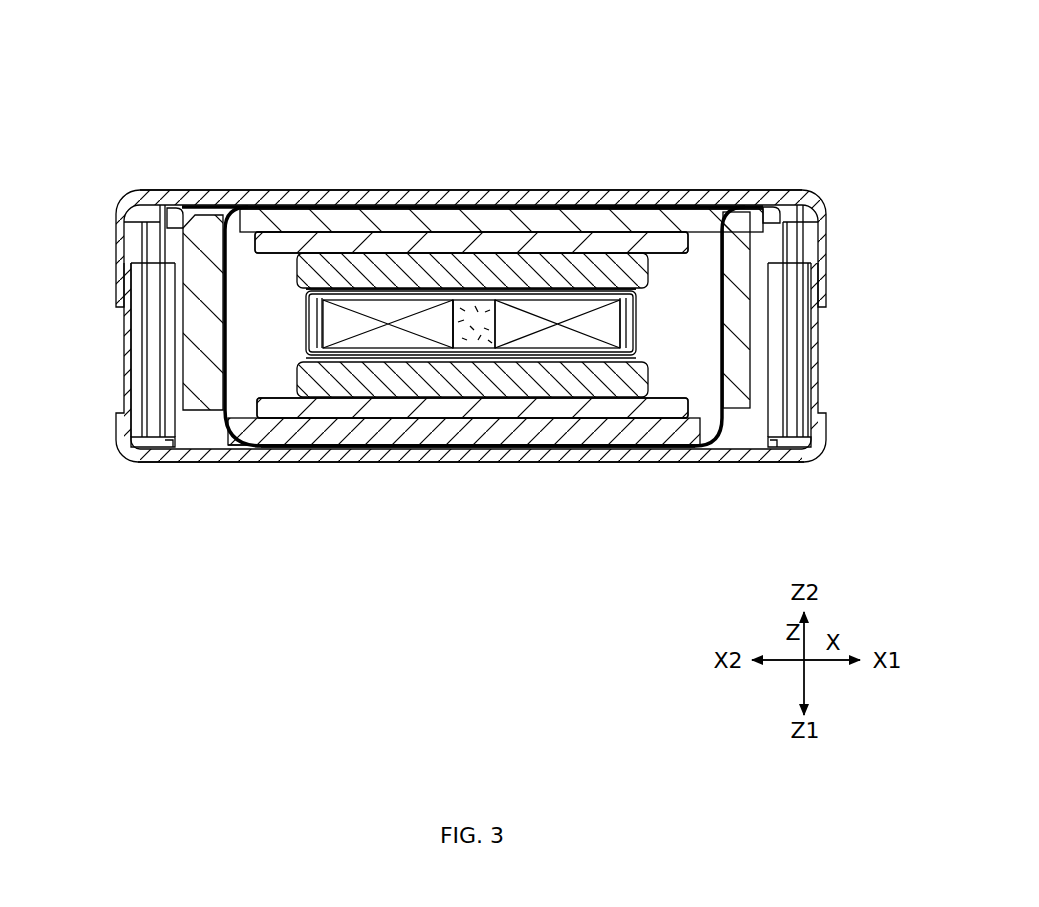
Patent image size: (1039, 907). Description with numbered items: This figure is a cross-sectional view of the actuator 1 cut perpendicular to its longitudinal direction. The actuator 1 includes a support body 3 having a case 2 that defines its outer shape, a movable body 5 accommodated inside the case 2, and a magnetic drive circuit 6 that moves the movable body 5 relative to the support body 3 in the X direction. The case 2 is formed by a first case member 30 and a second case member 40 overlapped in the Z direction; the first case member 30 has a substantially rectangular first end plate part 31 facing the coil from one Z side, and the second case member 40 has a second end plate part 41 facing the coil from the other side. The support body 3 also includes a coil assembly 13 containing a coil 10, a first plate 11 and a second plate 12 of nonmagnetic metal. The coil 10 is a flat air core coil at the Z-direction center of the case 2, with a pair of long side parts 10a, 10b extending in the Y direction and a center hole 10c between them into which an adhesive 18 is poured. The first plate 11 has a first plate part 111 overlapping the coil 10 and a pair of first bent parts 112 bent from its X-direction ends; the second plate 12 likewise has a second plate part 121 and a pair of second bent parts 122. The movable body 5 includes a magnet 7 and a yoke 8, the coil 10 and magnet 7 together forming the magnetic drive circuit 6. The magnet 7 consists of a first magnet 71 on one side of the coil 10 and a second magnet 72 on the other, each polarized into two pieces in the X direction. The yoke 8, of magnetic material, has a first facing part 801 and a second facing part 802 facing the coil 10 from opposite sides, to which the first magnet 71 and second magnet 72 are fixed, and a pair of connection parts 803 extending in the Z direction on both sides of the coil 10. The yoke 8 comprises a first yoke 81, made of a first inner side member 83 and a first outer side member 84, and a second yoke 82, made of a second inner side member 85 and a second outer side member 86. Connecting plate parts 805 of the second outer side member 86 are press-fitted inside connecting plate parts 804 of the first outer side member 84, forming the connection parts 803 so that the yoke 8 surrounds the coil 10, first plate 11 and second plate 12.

The actuator 1 is at (133, 85).
The case 2 is at (471, 312).
The support body 3 is at (118, 192).
The movable body 5 is at (272, 204).
The magnetic drive circuit 6 is at (472, 283).
The magnet 7 is at (472, 235).
The yoke 8 is at (470, 332).
The coil 10 is at (471, 302).
The long side part 10a is at (562, 342).
The long side part 10b is at (407, 338).
The center hole 10c is at (468, 333).
The first plate 11 is at (547, 412).
The second plate 12 is at (525, 257).
The coil assembly 13 is at (297, 340).
The adhesive 18 is at (478, 315).
The first case member 30 is at (471, 407).
The first end plate part 31 is at (203, 460).
The second case member 40 is at (471, 190).
The second end plate part 41 is at (688, 190).
The first magnet 71 is at (537, 383).
The second magnet 72 is at (523, 270).
The first yoke 81 is at (464, 503).
The second yoke 82 is at (501, 154).
The first inner side member 83 is at (612, 430).
The first outer side member 84 is at (600, 408).
The second inner side member 85 is at (343, 243).
The second outer side member 86 is at (378, 228).
The first plate part 111 is at (367, 362).
The first bent part 112 is at (303, 345).
The second plate part 121 is at (425, 292).
The second bent part 122 is at (238, 212).
The first facing part 801 is at (648, 447).
The second facing part 802 is at (620, 207).
The connection part 803 is at (470, 326).
The connecting plate part 804 is at (215, 322).
The connecting plate part 805 is at (243, 300).